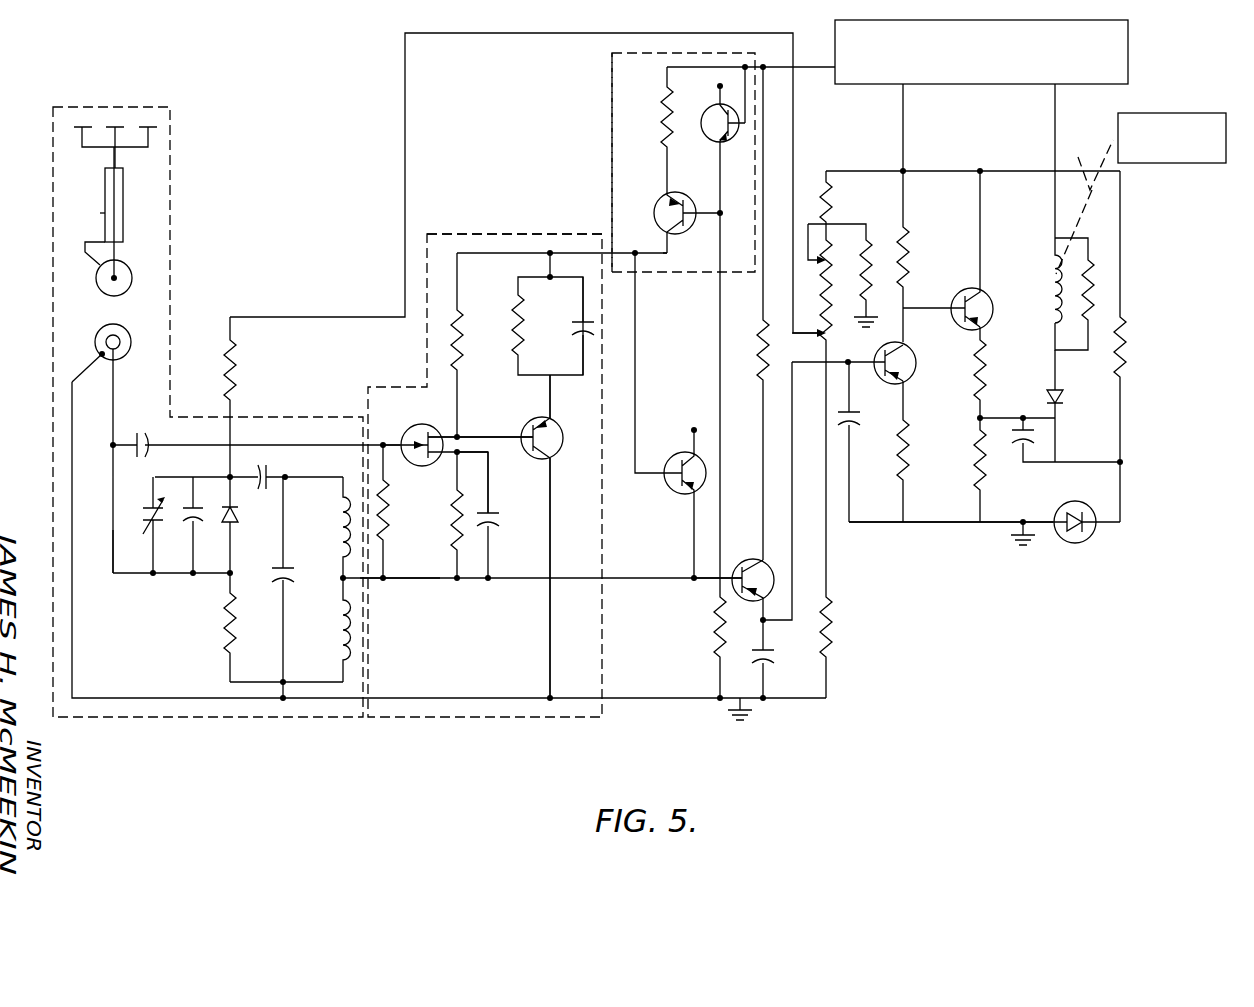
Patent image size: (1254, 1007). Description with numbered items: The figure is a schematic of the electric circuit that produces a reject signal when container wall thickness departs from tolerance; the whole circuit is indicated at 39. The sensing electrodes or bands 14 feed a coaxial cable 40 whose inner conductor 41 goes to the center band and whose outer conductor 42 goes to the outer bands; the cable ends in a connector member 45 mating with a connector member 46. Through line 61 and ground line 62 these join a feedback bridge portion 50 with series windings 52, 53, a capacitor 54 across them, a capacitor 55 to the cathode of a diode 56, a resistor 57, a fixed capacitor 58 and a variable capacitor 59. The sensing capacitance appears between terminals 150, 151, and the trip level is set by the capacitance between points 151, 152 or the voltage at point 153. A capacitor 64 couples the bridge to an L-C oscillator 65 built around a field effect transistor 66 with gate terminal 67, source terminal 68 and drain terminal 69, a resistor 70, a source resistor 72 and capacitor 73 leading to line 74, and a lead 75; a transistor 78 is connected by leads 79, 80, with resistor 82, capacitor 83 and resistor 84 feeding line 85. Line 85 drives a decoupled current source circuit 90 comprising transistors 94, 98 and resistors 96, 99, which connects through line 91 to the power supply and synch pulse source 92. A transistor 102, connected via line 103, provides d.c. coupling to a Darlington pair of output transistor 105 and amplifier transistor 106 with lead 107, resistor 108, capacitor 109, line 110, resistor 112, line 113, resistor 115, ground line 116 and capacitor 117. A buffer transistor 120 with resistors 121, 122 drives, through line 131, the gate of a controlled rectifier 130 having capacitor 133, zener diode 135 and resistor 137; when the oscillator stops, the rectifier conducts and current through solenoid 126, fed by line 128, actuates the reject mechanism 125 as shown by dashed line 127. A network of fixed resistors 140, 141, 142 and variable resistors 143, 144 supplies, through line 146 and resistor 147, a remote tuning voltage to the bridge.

The electrodes or bands 14 is at (147, 127).
The control circuit 39 is at (345, 300).
The coaxial cable 40 is at (128, 200).
The inner conductor 41 is at (123, 187).
The outer conductor 42 is at (100, 213).
The connector member 45 is at (133, 283).
The connector member 46 is at (124, 330).
The feedback bridge portion 50 is at (289, 415).
The transformer winding 52 is at (341, 532).
The transformer winding 53 is at (341, 640).
The capacitor 54 is at (288, 592).
The capacitor 55 is at (265, 490).
The diode 56 is at (236, 520).
The resistor 57 is at (222, 637).
The fixed capacitor 58 is at (198, 528).
The variable capacitor 59 is at (158, 530).
The line 61 is at (113, 552).
The line 62 is at (72, 628).
The capacitor 64 is at (143, 432).
The L-C oscillator 65 is at (487, 234).
The field effect transistor 66 is at (425, 425).
The gate terminal 67 is at (385, 442).
The source terminal 68 is at (443, 453).
The drain terminal 69 is at (456, 434).
The resistor 70 is at (388, 520).
The source resistor 72 is at (455, 535).
The capacitor 73 is at (490, 513).
The line 74 is at (517, 577).
The lead 75 is at (410, 580).
The transistor 78 is at (558, 428).
The lead 79 is at (498, 436).
The lead 80 is at (552, 516).
The resistor 82 is at (526, 313).
The capacitor 83 is at (576, 335).
The resistor 84 is at (462, 340).
The line 85 is at (572, 253).
The circuit portion 90 is at (612, 95).
The line 91 is at (805, 67).
The power supply and synch pulse source 92 is at (1130, 43).
The first transistor 94 is at (711, 136).
The resistor 96 is at (715, 636).
The second transistor 98 is at (655, 206).
The resistor 99 is at (665, 120).
The transistor 102 is at (670, 456).
The line 103 is at (638, 383).
The first transistor 105 is at (776, 576).
The second transistor 106 is at (896, 382).
The lead 107 is at (740, 570).
The resistor 108 is at (760, 346).
The capacitor 109 is at (764, 665).
The line 110 is at (792, 546).
The resistor 112 is at (908, 266).
The line 113 is at (905, 129).
The resistor 115 is at (908, 460).
The line 116 is at (928, 522).
The capacitor 117 is at (852, 427).
The transistor 120 is at (985, 299).
The resistor 121 is at (975, 386).
The resistor 122 is at (975, 471).
The reject mechanism 125 is at (1170, 112).
The solenoid 126 is at (1050, 292).
The dashed line 127 is at (1084, 204).
The line 128 is at (1053, 126).
The controlled rectifier 130 is at (1058, 405).
The line 131 is at (1000, 418).
The capacitor 133 is at (1020, 453).
The zener diode 135 is at (1088, 541).
The resistor 137 is at (1125, 354).
The fixed resistor 140 is at (833, 203).
The fixed resistor 141 is at (868, 246).
The fixed resistor 142 is at (829, 634).
The variable resistor 143 is at (822, 285).
The variable resistor 144 is at (815, 333).
The line 146 is at (795, 126).
The resistor 147 is at (227, 372).
The terminal 150 is at (282, 680).
The terminal 151 is at (228, 578).
The point 152 is at (286, 476).
The point 153 is at (228, 474).